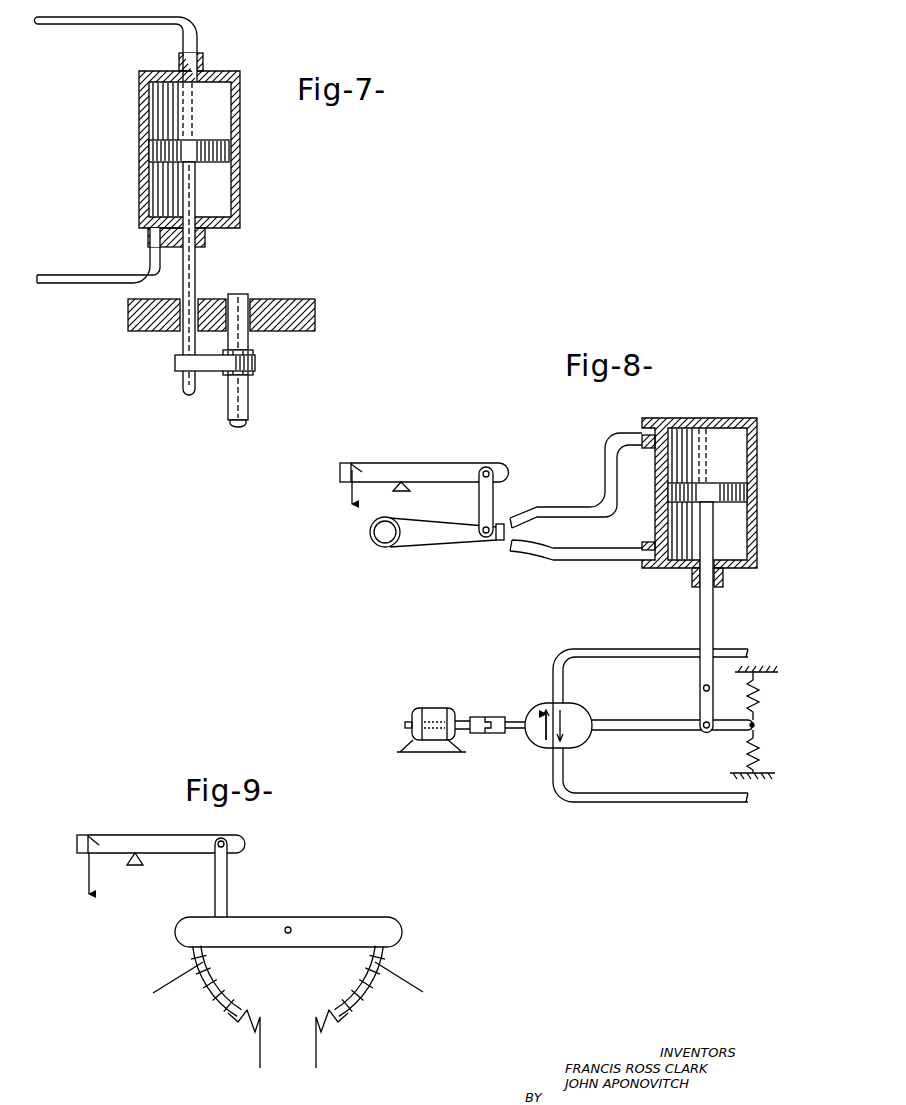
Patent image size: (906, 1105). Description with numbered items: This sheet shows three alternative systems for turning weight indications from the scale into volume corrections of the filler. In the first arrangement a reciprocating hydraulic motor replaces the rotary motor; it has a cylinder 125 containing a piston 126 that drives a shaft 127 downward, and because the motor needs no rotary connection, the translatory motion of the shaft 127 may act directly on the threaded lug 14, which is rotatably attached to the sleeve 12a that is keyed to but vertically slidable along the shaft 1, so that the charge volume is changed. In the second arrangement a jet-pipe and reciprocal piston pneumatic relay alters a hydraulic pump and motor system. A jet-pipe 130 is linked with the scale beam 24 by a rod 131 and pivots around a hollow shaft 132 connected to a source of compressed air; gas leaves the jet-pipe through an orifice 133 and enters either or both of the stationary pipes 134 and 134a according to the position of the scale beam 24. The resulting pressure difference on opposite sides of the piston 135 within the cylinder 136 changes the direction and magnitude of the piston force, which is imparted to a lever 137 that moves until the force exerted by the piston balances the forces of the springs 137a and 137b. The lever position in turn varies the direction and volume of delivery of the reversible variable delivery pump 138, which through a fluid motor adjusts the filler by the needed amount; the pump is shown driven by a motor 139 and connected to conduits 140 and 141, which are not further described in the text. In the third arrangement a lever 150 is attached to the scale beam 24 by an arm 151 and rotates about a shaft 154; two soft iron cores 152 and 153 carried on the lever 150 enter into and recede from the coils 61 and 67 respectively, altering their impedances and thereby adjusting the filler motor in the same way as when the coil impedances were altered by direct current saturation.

In FIG. 7, the shaft 1 is at (260, 348).
In FIG. 7, the sleeve 12a is at (250, 385).
In FIG. 7, the threaded lug 14 is at (180, 365).
In FIG. 8, the scale beam 24 is at (441, 468).
In FIG. 9, the scale beam 24 is at (185, 842).
In FIG. 9, the coil 61 is at (215, 1006).
In FIG. 9, the coil 67 is at (373, 998).
In FIG. 7, the cylinder 125 is at (240, 107).
In FIG. 7, the piston 126 is at (225, 152).
In FIG. 7, the shaft 127 is at (190, 270).
In FIG. 8, the jet-pipe 130 is at (432, 548).
In FIG. 8, the rod 131 is at (493, 497).
In FIG. 8, the hollow shaft 132 is at (375, 536).
In FIG. 8, the orifice 133 is at (498, 545).
In FIG. 8, the stationary pipe 134 is at (553, 560).
In FIG. 8, the stationary pipe 134a is at (545, 512).
In FIG. 8, the piston 135 is at (745, 492).
In FIG. 8, the cylinder 136 is at (730, 437).
In FIG. 8, the lever 137 is at (628, 728).
In FIG. 8, the spring 137a is at (770, 693).
In FIG. 8, the spring 137b is at (745, 750).
In FIG. 8, the reversible variable delivery pump 138 is at (538, 735).
In FIG. 8, the motor 139 is at (433, 718).
In FIG. 8, the upper conduit 140 is at (738, 650).
In FIG. 8, the lower conduit 141 is at (725, 800).
In FIG. 9, the lever 150 is at (346, 925).
In FIG. 9, the arm 151 is at (227, 883).
In FIG. 9, the soft iron core 152 is at (192, 953).
In FIG. 9, the soft iron core 153 is at (385, 955).
In FIG. 9, the shaft 154 is at (291, 924).